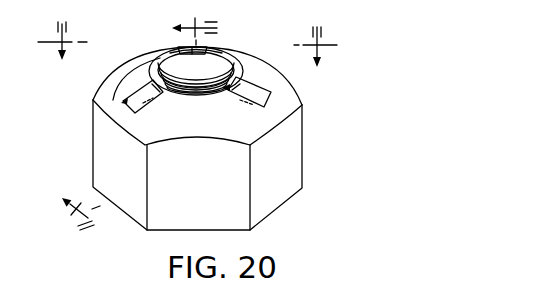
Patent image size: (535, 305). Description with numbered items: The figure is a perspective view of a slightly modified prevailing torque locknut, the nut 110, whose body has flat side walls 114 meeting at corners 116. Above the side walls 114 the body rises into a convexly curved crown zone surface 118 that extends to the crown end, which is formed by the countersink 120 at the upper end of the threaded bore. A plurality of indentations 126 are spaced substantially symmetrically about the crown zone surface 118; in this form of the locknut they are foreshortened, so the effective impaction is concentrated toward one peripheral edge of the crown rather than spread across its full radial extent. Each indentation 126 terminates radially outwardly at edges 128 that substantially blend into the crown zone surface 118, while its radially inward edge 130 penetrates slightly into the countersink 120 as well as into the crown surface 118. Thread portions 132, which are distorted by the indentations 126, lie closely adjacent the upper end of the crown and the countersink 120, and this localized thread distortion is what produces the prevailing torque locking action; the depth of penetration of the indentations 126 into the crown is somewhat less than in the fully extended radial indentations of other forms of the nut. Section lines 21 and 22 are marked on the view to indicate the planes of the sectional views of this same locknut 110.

The nut 110 is at (306, 157).
The side walls 114 is at (278, 185).
The corners 116 is at (250, 192).
The crown zone surface 118 is at (130, 80).
The countersink 120 is at (233, 62).
The indentations 126 is at (235, 92).
The edges 128 is at (126, 101).
The radially inward edge 130 is at (208, 47).
The thread portions 132 is at (186, 50).
The section line 21- 21 is at (128, 119).
The section line 22- 22 is at (190, 64).